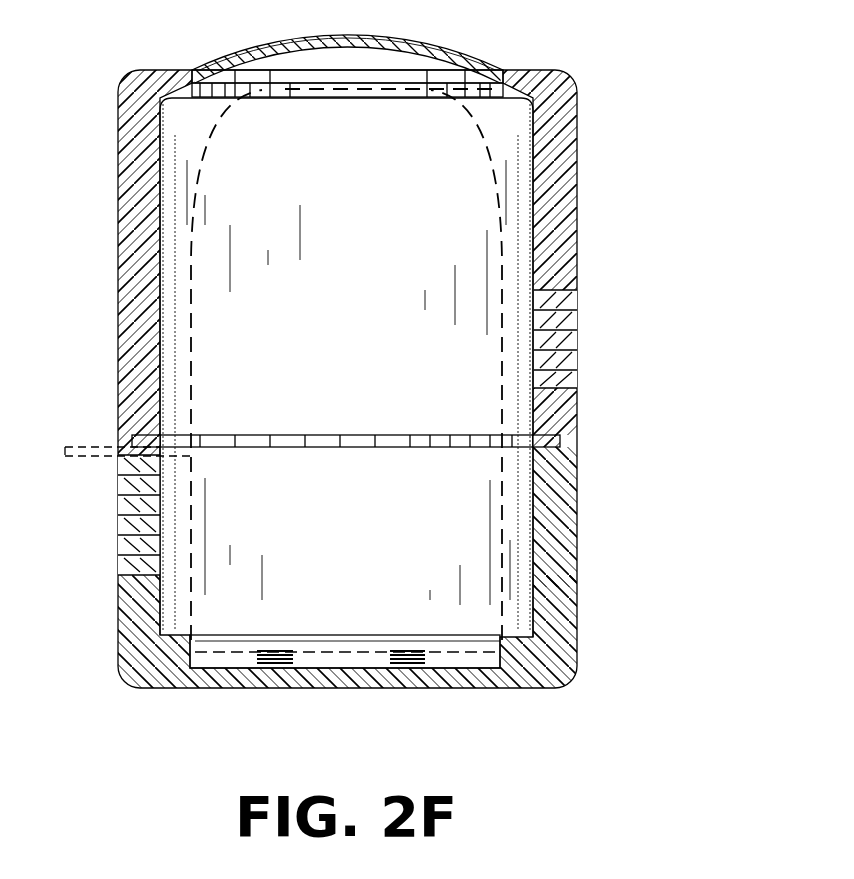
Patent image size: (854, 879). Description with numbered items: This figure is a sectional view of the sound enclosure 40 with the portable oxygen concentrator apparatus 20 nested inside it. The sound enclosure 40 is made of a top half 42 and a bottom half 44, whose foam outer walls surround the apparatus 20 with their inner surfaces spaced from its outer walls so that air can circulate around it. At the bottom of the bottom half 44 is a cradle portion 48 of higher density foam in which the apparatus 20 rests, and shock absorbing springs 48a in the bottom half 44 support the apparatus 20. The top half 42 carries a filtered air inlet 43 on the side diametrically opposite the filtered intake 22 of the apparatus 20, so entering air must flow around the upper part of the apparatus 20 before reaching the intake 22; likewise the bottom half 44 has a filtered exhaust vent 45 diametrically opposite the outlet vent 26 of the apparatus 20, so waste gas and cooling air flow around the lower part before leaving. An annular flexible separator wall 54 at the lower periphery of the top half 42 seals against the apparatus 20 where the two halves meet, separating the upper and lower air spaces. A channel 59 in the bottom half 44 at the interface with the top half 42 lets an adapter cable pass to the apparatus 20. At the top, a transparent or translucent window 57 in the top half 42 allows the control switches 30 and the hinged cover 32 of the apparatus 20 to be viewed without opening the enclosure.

The sound enclosure 40 is at (619, 196).
The top half 42 is at (578, 262).
The filtered air inlet 43 is at (570, 350).
The bottom half 44 is at (578, 508).
The filtered exhaust vent 45 is at (126, 549).
The window 57 is at (447, 54).
The oxygen concentrator apparatus 20 is at (364, 280).
The filtered intake 22 is at (193, 345).
The outlet vent 26 is at (501, 527).
The control switches 30 is at (392, 132).
The cover 32 is at (353, 90).
The separator wall 54 is at (410, 443).
The channel 59 is at (122, 442).
The cradle portion 48 is at (220, 662).
The shock absorbing springs 48a is at (395, 664).